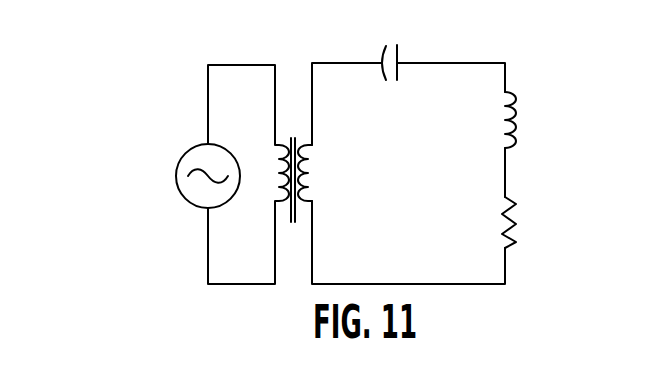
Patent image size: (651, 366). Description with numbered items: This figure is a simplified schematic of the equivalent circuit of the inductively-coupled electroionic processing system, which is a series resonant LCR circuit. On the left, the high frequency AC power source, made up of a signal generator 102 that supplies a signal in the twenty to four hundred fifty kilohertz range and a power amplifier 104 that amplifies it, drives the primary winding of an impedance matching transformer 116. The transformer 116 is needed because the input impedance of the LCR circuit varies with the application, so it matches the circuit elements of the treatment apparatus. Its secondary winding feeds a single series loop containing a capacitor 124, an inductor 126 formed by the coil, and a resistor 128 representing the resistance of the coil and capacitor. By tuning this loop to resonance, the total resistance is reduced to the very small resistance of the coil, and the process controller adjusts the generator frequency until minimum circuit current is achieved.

The signal generator 102 is at (148, 144).
The power amplifier 104 is at (177, 177).
The impedance matching transformer 116 is at (312, 147).
The capacitor 124 is at (402, 54).
The inductor 126 is at (511, 94).
The resistor 128 is at (509, 196).